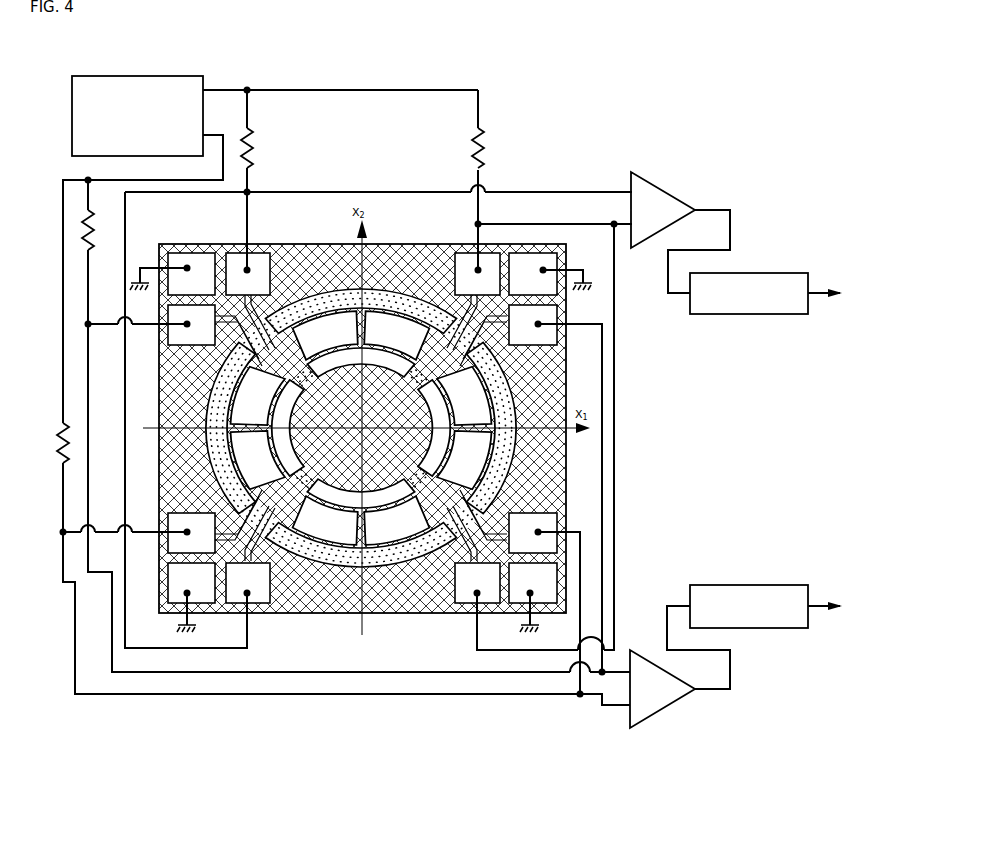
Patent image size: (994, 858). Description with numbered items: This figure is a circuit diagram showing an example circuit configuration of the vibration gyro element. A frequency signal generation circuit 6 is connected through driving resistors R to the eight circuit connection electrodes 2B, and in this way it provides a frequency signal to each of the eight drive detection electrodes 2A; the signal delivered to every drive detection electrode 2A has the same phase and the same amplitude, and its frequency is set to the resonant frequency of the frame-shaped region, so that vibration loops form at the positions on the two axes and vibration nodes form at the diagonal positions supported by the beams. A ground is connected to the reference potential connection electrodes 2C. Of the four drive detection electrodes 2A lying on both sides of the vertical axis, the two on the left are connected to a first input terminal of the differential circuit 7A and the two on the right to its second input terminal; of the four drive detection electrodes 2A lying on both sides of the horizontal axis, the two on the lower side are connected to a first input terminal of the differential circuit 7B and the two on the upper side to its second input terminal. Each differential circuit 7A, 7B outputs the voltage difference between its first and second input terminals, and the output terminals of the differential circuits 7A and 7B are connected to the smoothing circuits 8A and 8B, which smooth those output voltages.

The frequency signal generation circuit 6 is at (176, 76).
The differential circuit 7A is at (633, 172).
The differential circuit 7B is at (633, 650).
The smoothing circuit 8A is at (780, 273).
The smoothing circuit 8B is at (780, 585).
The drive detection electrode 2A is at (396, 532).
The circuit connection electrode 2B is at (482, 581).
The reference potential connection electrode 2C is at (545, 580).
The driving resistor R is at (277, 295).